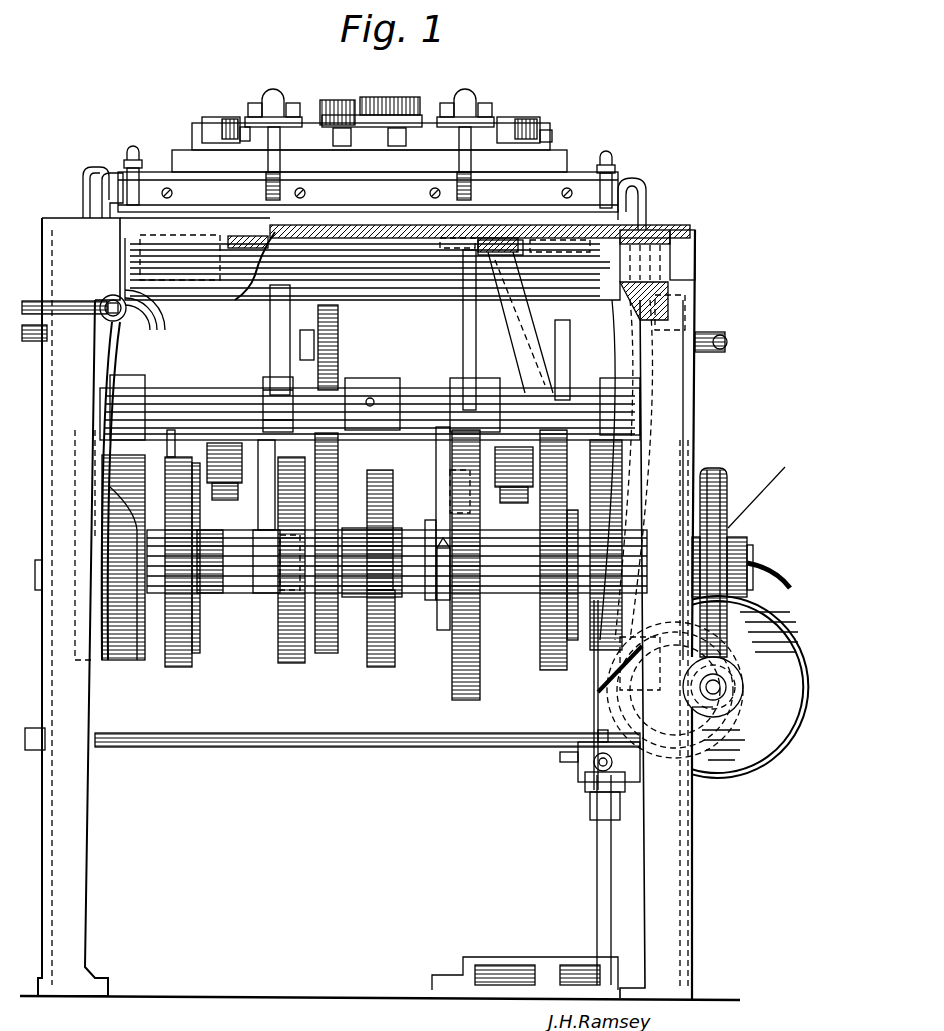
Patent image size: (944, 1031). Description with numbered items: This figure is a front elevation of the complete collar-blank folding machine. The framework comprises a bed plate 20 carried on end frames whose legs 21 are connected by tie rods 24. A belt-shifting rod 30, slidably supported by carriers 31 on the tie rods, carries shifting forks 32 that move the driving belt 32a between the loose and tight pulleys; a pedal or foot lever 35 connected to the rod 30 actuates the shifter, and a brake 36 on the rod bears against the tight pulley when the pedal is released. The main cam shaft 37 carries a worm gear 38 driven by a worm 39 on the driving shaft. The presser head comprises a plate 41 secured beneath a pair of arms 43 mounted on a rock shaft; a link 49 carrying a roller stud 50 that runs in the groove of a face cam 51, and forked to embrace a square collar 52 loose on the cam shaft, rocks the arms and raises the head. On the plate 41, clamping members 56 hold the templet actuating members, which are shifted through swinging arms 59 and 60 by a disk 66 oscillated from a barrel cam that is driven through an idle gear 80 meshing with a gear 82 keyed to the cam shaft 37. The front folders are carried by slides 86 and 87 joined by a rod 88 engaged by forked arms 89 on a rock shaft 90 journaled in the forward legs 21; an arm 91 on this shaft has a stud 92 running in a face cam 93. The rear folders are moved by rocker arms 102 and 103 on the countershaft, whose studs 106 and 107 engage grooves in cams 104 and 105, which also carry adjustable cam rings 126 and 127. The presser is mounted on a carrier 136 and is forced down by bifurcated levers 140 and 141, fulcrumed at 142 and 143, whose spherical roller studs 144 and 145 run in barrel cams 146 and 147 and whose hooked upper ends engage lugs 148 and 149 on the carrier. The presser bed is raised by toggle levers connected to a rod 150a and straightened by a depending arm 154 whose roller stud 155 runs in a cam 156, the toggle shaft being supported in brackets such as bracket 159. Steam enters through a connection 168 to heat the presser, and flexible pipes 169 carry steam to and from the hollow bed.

The bed plate 20 is at (695, 236).
The legs 21 is at (88, 898).
The tie rods 24 is at (268, 748).
The belt-shifting rod 30 is at (596, 768).
The carriers 31 is at (615, 795).
The shifting forks 32 is at (768, 585).
The driving belt 32a is at (763, 497).
The pedal or foot lever 35 is at (498, 957).
The brake 36 is at (675, 690).
The main cam shaft 37 is at (238, 578).
The worm gear 38 is at (727, 510).
The worm 39 is at (740, 704).
The plate 41 is at (192, 128).
The arms 43 is at (273, 92).
The link 49 is at (440, 626).
The stud 50 is at (450, 488).
The face cam 51 is at (480, 660).
The square collar 52 is at (428, 528).
The clamping members 56 is at (368, 192).
The swinging arms 59 is at (335, 128).
The swinging arms 60 is at (215, 117).
The disk 66 is at (392, 100).
The idle gear 80 is at (304, 345).
The gear 82 is at (325, 655).
The slide 86 is at (228, 243).
The slide 87 is at (512, 248).
The rod 88 is at (390, 272).
The actuating arms 89 is at (280, 330).
The rock shaft 90 is at (288, 386).
The arm 91 is at (352, 385).
The stud 92 is at (378, 596).
The face cam 93 is at (381, 670).
The rocker arm 102 is at (192, 370).
The rocker arm 103 is at (562, 380).
The cam 104 is at (182, 667).
The cam 105 is at (552, 672).
The stud 106 is at (195, 505).
The stud 107 is at (560, 500).
The cam ring 126 is at (198, 640).
The cam ring 127 is at (548, 630).
The carrier 136 is at (148, 167).
The bifurcated lever 140 is at (83, 190).
The bifurcated lever 141 is at (655, 200).
The fulcrum 142 is at (105, 300).
The fulcrum 143 is at (670, 300).
The spherical roller-stud 144 is at (98, 500).
The spherical roller-stud 145 is at (680, 460).
The barrel cam 146 is at (118, 640).
The barrel cam 147 is at (590, 680).
The lug 148 is at (112, 178).
The lug 149 is at (625, 200).
The rod 150a is at (335, 345).
The depending arm 154 is at (268, 500).
The roller stud 155 is at (285, 598).
The cam 156 is at (278, 662).
The bracket 159 is at (530, 316).
The connection 168 is at (195, 326).
The flexible pipes 169 is at (736, 350).